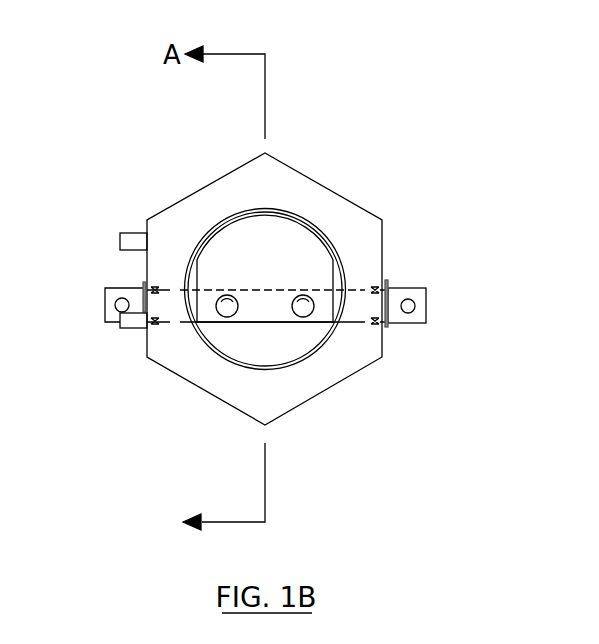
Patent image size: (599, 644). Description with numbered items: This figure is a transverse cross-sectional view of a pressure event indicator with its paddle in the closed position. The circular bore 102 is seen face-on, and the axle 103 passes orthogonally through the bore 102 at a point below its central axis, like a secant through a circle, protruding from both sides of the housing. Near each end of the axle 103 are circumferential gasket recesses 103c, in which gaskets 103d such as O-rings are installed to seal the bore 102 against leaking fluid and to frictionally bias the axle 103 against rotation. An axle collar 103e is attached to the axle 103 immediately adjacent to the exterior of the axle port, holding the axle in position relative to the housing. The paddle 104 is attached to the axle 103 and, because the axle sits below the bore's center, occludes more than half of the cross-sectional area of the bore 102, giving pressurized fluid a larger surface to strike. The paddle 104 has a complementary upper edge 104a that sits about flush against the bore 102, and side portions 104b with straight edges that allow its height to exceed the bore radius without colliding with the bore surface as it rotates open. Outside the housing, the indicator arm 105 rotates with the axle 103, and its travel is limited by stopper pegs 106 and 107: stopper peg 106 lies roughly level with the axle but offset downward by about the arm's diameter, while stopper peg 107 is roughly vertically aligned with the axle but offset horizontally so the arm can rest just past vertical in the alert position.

The bore 102 is at (262, 342).
The axle 103 is at (422, 323).
The gasket recess 103c is at (375, 324).
The gasket 103d is at (375, 287).
The axle collar 103e is at (388, 328).
The paddle 104 is at (290, 237).
The complementary upper edge 104a is at (227, 220).
The side portions 104b is at (190, 272).
The indicator arm 105 is at (115, 304).
The stopper peg 106 is at (123, 330).
The stopper peg 107 is at (120, 240).